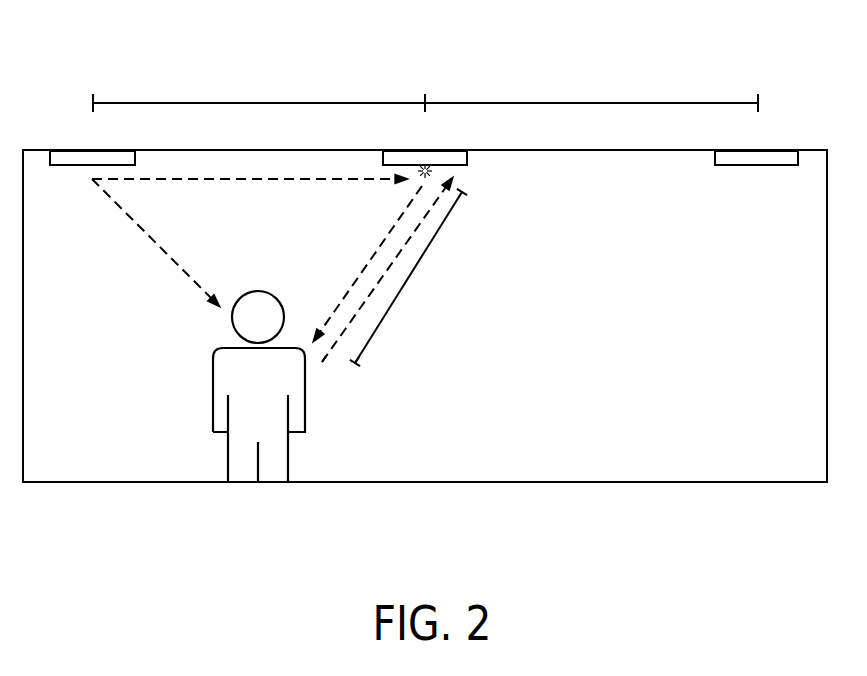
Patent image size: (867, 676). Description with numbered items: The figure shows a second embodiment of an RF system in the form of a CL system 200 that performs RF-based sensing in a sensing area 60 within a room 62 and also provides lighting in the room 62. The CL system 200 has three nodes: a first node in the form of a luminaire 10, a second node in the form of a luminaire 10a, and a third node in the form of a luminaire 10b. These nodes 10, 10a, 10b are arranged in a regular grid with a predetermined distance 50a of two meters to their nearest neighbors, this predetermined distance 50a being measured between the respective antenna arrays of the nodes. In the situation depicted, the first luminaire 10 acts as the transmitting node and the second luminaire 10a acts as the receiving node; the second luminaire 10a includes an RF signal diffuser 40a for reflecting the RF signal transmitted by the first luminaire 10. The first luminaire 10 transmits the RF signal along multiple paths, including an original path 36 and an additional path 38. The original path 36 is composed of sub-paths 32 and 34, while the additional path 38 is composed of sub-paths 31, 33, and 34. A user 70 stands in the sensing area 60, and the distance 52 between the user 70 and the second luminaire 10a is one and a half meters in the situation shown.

The luminaire 10 is at (68, 187).
The luminaire 10a is at (446, 134).
The luminaire 10b is at (746, 181).
The sub-path 31 is at (215, 181).
The sub-path 32 is at (170, 258).
The sub-path 33 is at (373, 263).
The sub-path 34 is at (437, 229).
The original path 36 is at (332, 382).
The additional path 38 is at (396, 385).
The RF signal diffuser 40a is at (455, 177).
The predetermined distance 50a is at (297, 102).
The distance 52 is at (395, 312).
The sensing area 60 is at (74, 469).
The room 62 is at (87, 483).
The user 70 is at (218, 386).
The CL system 200 is at (150, 509).